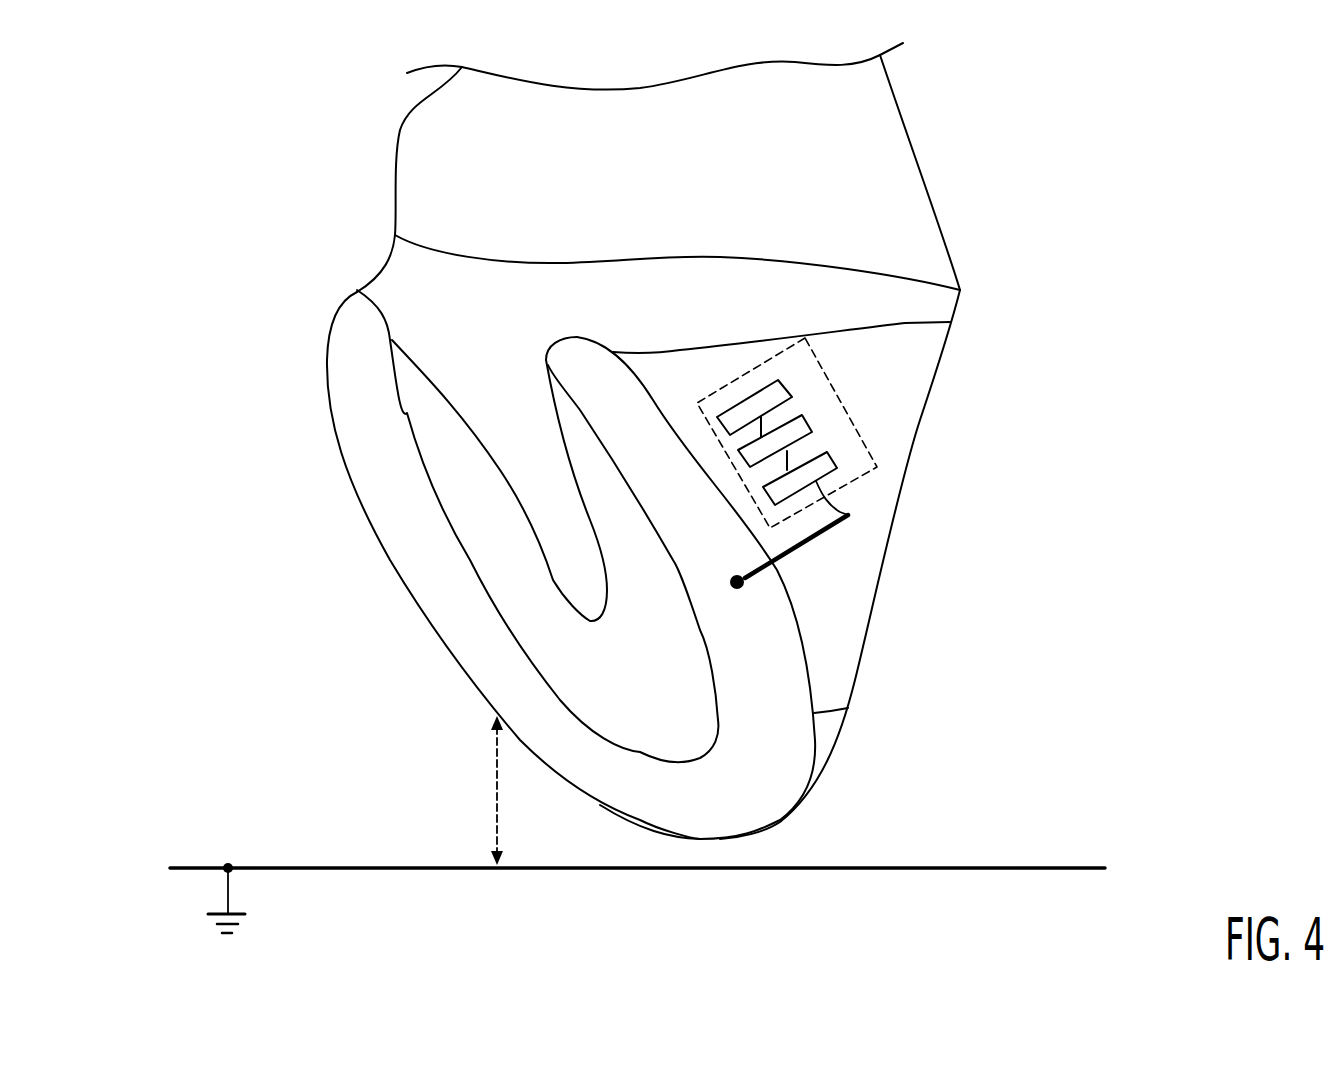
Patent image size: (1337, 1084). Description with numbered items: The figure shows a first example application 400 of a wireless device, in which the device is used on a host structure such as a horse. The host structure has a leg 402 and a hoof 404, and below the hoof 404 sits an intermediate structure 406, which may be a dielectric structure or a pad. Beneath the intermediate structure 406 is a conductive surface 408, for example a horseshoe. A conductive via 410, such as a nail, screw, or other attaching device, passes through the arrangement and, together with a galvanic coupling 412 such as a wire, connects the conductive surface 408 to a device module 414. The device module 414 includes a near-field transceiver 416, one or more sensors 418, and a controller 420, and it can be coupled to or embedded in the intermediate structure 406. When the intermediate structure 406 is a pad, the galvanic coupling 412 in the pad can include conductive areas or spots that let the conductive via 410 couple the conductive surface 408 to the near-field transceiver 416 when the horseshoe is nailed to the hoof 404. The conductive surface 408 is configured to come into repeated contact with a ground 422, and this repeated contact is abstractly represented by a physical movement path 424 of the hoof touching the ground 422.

The first example application 400 is at (199, 188).
The leg 402 is at (920, 172).
The hoof 404 is at (491, 327).
The intermediate structure 406 is at (840, 647).
The conductive surface 408 is at (440, 600).
The conductive via 410 is at (810, 544).
The galvanic coupling 412 is at (842, 503).
The device module 414 is at (864, 480).
The near-field transceiver 416 is at (835, 456).
The sensor 418 is at (789, 384).
The controller 420 is at (810, 419).
The ground 422 is at (215, 920).
The physical movement path 424 is at (497, 798).